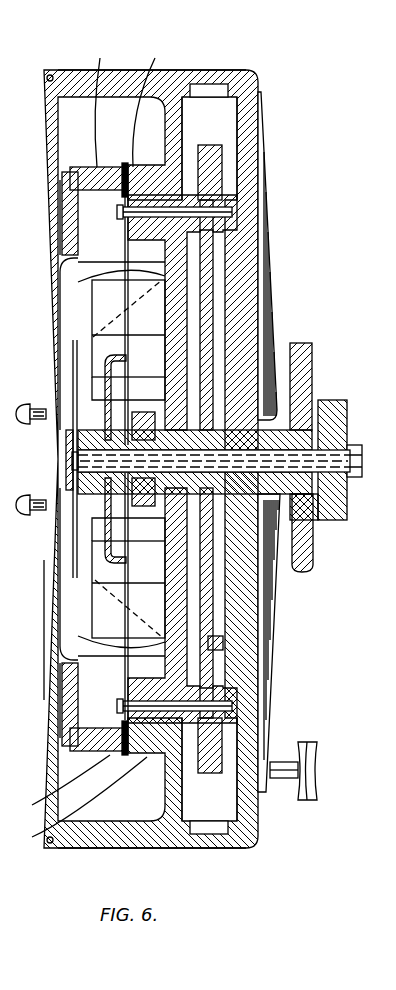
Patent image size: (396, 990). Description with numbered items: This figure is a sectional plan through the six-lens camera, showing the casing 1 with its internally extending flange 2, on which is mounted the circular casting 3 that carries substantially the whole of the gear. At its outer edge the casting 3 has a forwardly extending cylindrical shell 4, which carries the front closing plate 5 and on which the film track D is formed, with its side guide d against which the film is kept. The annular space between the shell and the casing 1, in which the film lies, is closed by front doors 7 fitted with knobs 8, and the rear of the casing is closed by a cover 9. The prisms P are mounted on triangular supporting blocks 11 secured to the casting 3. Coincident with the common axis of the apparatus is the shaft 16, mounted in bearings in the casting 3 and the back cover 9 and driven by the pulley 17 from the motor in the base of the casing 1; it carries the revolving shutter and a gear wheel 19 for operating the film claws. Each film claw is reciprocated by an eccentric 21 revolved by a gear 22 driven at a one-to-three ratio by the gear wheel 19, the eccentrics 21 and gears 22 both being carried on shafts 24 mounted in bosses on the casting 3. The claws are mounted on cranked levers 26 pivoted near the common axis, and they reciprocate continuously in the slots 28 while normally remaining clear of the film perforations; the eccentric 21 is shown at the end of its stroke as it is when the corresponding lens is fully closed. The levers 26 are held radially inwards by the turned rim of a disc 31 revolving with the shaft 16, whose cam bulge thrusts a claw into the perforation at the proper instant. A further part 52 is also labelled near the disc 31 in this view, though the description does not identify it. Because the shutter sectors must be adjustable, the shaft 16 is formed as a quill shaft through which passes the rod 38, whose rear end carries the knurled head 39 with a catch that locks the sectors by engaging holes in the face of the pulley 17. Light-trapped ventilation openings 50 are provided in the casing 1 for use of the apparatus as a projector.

The casing 1 is at (123, 80).
The internally extending flange 2 is at (185, 121).
The circular casting 3 is at (185, 300).
The shell 4 is at (70, 172).
The front closing plate 5 is at (55, 620).
The front doors 7 is at (45, 143).
The knobs 8 is at (47, 500).
The cover 9 is at (250, 305).
The triangular supporting blocks 11 is at (105, 350).
The shaft 16 is at (318, 420).
The pulley 17 is at (303, 578).
The gear wheel 19 is at (225, 628).
The eccentric 21 is at (75, 197).
The gear 22 is at (205, 175).
The shafts 24 is at (225, 212).
The lever 26 is at (95, 265).
The slots 28 is at (124, 165).
The disc 31 is at (80, 527).
The rod 38 is at (310, 410).
The knurled head 39 is at (315, 520).
The ventilation openings 50 is at (202, 78).
The rod 52 is at (125, 522).
The film track D is at (59, 431).
The side guide d is at (91, 442).
The prisms P is at (103, 303).